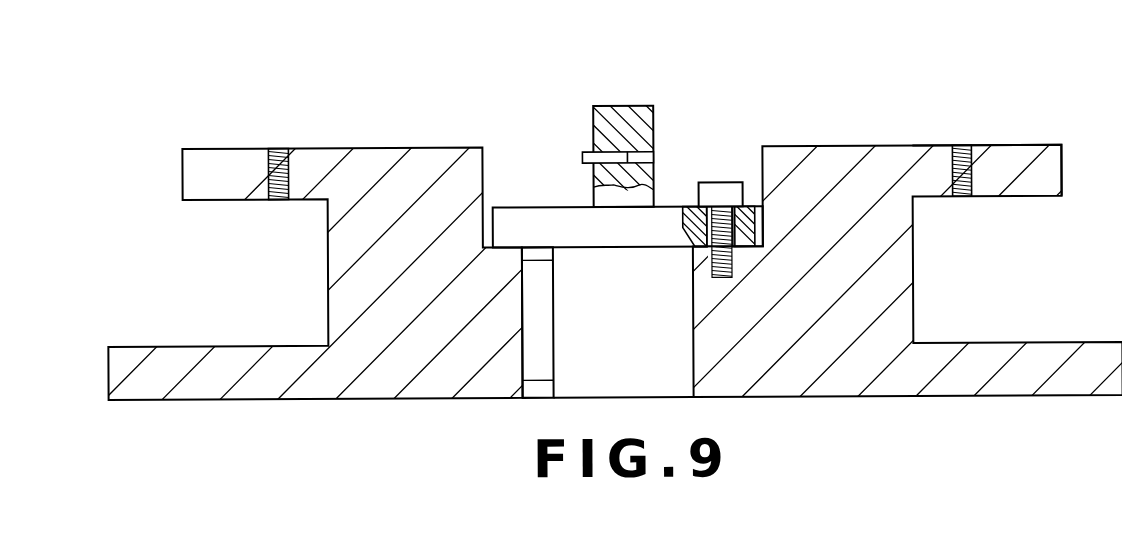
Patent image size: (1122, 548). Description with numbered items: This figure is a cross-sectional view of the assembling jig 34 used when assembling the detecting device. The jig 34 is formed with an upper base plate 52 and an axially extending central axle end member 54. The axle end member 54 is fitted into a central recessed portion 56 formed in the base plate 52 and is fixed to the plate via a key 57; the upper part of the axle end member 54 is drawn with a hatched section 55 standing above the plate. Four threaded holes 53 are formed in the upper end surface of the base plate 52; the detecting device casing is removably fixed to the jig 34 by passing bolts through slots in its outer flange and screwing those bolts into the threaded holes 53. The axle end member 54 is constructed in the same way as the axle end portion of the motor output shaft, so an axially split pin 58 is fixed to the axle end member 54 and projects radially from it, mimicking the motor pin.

The assembling jig 34 is at (905, 106).
The upper base plate 52 is at (1028, 146).
The threaded holes 53 is at (282, 147).
The axle end member 54 is at (654, 167).
The locating block 55 is at (575, 123).
The central recessed portion 56 is at (485, 156).
The key 57 is at (545, 353).
The axially split pin 58 is at (585, 157).